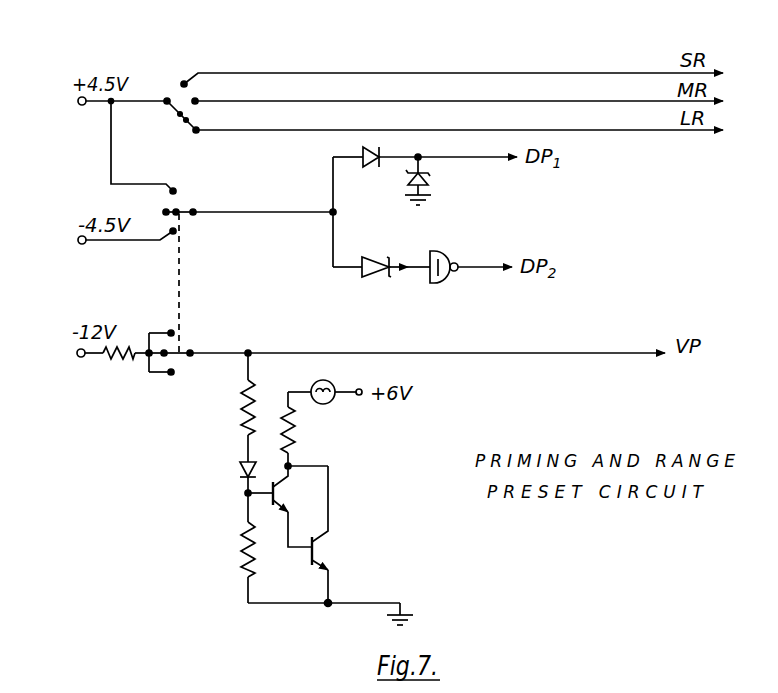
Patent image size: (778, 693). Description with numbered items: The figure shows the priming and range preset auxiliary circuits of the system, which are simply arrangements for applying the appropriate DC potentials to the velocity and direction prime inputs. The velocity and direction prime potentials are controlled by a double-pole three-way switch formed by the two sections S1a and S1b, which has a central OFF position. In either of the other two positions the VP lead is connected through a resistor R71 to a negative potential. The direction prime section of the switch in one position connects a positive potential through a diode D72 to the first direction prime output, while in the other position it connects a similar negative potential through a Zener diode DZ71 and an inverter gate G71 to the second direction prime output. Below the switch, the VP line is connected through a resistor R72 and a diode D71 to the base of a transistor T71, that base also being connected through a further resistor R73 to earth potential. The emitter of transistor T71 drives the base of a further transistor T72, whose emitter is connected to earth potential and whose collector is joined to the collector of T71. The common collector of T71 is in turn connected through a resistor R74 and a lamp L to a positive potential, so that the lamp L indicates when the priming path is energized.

The switch section S1a is at (199, 270).
The switch section S1b is at (194, 336).
The resistor R71 is at (117, 367).
The resistor R72 is at (224, 407).
The resistor R73 is at (224, 548).
The resistor R74 is at (308, 429).
The diode D71 is at (225, 476).
The diode D72 is at (362, 169).
The Zener diode DZ71 is at (367, 279).
The inverter gate G71 is at (446, 252).
The transistor T71 is at (295, 489).
The further transistor T72 is at (343, 518).
The lamp L is at (322, 379).